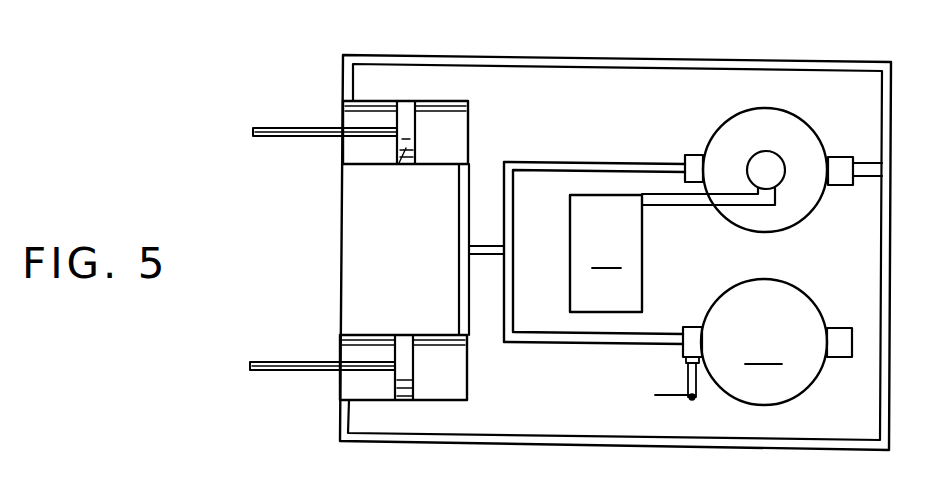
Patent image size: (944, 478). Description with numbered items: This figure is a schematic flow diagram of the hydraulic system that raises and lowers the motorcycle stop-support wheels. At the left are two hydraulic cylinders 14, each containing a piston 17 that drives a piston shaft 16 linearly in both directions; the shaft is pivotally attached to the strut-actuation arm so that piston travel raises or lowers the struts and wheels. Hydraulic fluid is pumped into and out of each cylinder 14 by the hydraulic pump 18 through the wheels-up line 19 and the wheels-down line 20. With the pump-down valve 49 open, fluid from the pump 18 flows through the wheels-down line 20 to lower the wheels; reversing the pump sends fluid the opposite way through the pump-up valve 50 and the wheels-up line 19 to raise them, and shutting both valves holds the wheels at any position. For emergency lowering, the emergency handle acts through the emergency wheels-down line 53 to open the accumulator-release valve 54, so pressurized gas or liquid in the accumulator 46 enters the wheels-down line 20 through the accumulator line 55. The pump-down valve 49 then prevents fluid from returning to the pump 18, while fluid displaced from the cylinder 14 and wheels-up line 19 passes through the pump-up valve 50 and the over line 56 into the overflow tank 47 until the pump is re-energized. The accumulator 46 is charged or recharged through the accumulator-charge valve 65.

The hydraulic cylinder 14 is at (364, 165).
The piston shaft 16 is at (257, 138).
The piston 17 is at (394, 165).
The hydraulic pump 18 is at (734, 118).
The wheels-up line 19 is at (343, 78).
The wheels-down line 20 is at (459, 210).
The accumulator 46 is at (764, 342).
The overflow tank 47 is at (606, 253).
The pump-down valve 49 is at (687, 162).
The pump-up valve 50 is at (842, 157).
The emergency wheels-down line 53 is at (655, 395).
The accumulator-release valve 54 is at (677, 358).
The accumulator line 55 is at (506, 343).
The over line 56 is at (690, 207).
The accumulator-charge valve 65 is at (843, 329).